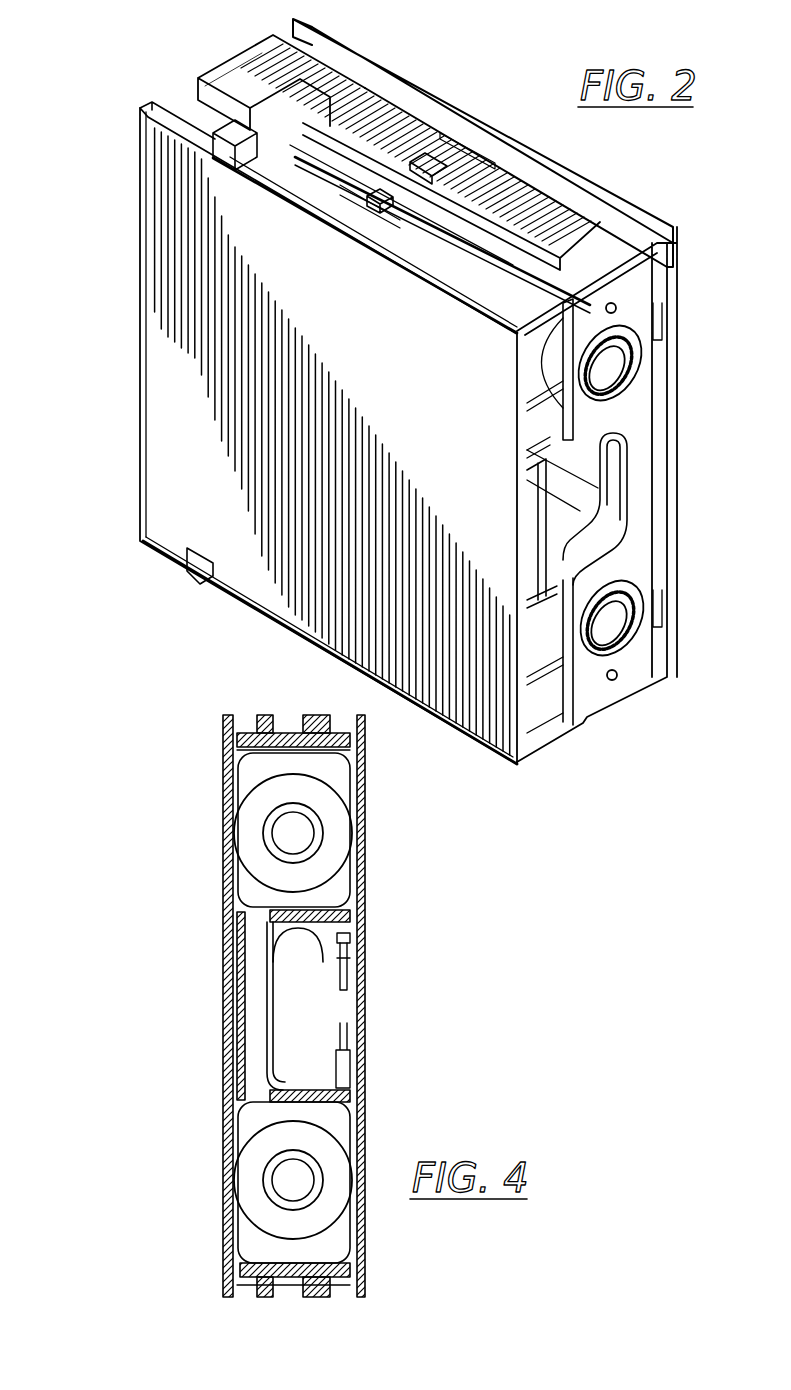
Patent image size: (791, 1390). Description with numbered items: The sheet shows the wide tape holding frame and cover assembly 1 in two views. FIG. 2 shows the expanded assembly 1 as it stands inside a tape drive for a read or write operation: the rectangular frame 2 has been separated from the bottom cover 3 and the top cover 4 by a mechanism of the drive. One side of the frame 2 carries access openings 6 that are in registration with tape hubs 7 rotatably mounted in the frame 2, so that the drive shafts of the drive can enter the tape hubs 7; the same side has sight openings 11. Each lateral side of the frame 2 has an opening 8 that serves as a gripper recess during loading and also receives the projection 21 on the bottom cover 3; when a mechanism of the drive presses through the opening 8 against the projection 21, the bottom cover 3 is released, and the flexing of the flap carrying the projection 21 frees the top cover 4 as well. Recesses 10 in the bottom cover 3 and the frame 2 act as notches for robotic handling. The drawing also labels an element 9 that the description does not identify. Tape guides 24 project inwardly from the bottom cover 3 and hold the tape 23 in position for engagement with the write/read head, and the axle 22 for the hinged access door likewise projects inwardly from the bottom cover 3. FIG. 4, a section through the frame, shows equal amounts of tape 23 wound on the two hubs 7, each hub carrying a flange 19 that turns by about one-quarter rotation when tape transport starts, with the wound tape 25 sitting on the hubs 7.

In FIG. 2, the wide tape holding frame and cover assembly 1 is at (98, 318).
In FIG. 4, the wide tape holding frame and cover assembly 1 is at (186, 1028).
In FIG. 2, the rectangular frame 2 is at (236, 74).
In FIG. 4, the rectangular frame 2 is at (268, 732).
In FIG. 2, the bottom cover 3 is at (178, 478).
In FIG. 4, the bottom cover 3 is at (361, 905).
In FIG. 2, the top cover 4 is at (292, 27).
In FIG. 4, the top cover 4 is at (230, 753).
In FIG. 2, the access openings 6 is at (628, 380).
In FIG. 2, the tape hubs 7 is at (644, 340).
In FIG. 2, the opening 8 is at (432, 166).
In FIG. 2, the rail 9 is at (542, 190).
In FIG. 2, the recesses 10 is at (200, 152).
In FIG. 2, the sight openings 11 is at (616, 306).
In FIG. 4, the flange 19 is at (255, 775).
In FIG. 2, the projection 21 is at (332, 210).
In FIG. 2, the axle 22 is at (535, 520).
In FIG. 4, the axle 22 is at (366, 940).
In FIG. 2, the tape 23 is at (592, 470).
In FIG. 4, the tape 23 is at (233, 946).
In FIG. 2, the tape guides 24 is at (537, 424).
In FIG. 4, the tape guides 24 is at (340, 934).
In FIG. 4, the tape 25 is at (255, 840).